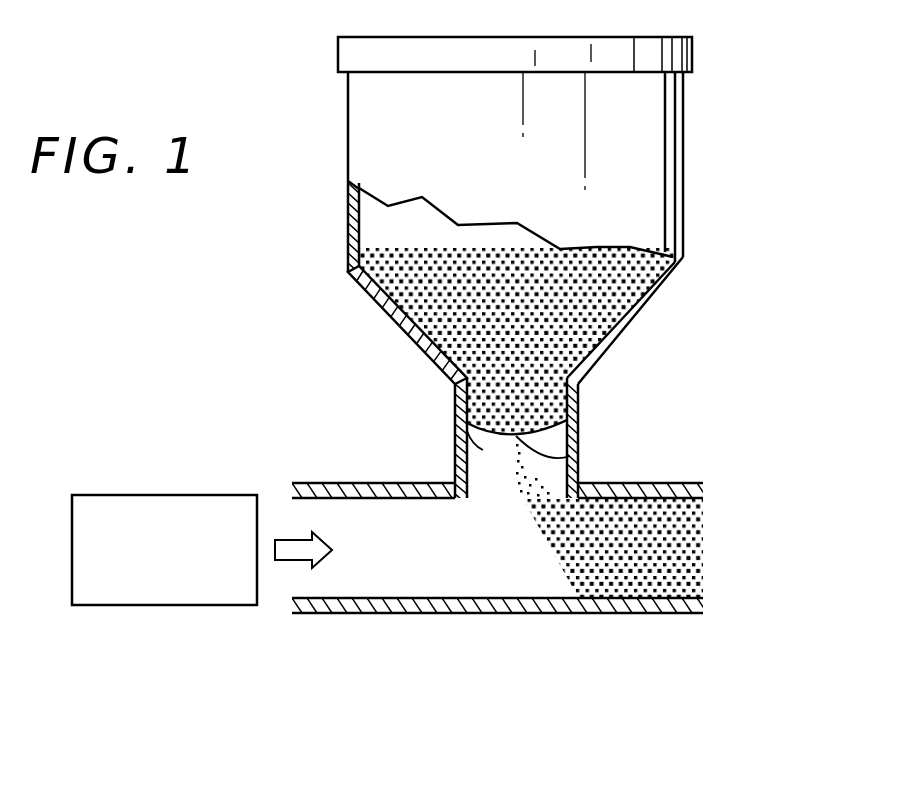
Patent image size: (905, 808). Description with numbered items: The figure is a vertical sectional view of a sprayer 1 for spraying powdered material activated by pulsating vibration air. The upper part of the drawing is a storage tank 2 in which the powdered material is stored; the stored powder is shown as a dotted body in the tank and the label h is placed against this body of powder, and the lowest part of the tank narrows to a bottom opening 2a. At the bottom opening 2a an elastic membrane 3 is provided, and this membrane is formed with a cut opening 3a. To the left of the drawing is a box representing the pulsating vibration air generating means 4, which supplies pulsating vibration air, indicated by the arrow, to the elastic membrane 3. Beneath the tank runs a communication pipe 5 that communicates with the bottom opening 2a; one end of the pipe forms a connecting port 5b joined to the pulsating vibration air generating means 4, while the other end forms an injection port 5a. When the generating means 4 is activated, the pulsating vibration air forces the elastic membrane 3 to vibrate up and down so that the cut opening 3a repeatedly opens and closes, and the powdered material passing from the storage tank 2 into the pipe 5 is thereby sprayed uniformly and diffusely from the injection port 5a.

The powder feeding apparatus 1 is at (722, 37).
The hopper 2 is at (683, 197).
The lower end outlet of hopper 2a is at (467, 483).
The elastic membrane 3 is at (453, 455).
The cut opening 3a is at (570, 456).
The pulsating air generating means 4 is at (138, 495).
The conveying pipe 5 is at (675, 483).
The downstream portion of conveying pipe 5a is at (702, 579).
The upstream portion of conveying pipe 5b is at (302, 582).
The powder level height h is at (400, 277).